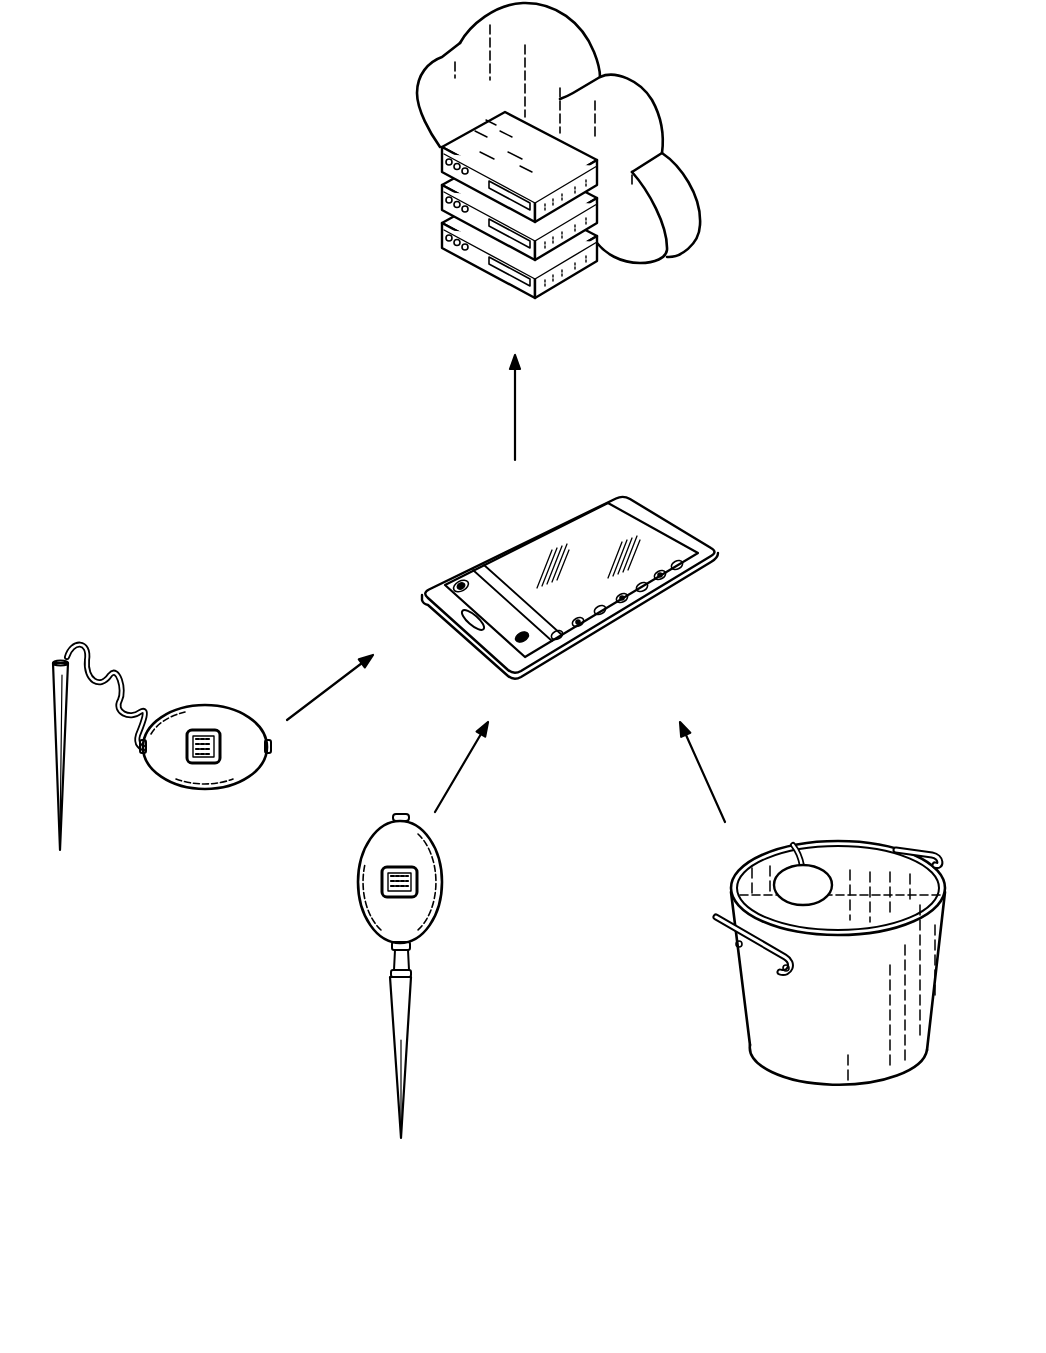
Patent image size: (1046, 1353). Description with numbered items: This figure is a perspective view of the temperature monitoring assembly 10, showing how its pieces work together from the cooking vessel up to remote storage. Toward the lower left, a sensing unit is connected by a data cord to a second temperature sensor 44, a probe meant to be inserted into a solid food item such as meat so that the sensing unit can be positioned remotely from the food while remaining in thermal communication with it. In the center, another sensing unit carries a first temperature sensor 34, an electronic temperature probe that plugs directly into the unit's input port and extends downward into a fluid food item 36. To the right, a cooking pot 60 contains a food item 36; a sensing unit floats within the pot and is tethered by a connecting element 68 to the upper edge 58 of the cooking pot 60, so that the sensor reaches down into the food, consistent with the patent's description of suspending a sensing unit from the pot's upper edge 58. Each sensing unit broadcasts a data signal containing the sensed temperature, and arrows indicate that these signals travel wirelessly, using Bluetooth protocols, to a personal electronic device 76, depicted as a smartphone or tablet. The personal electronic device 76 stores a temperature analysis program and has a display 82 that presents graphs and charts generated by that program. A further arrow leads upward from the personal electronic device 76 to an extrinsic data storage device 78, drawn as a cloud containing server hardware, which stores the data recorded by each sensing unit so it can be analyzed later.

The temperature monitoring assembly 10 is at (130, 37).
The first temperature sensor 34 is at (410, 1000).
The food item 36 is at (863, 863).
The second temperature sensor 44 is at (66, 777).
The upper edge 58 is at (740, 870).
The cooking pot 60 is at (810, 952).
The sensor tether 68 is at (797, 845).
The personal electronic device 76 is at (570, 564).
The extrinsic data storage device 78 is at (437, 192).
The display 82 is at (611, 518).